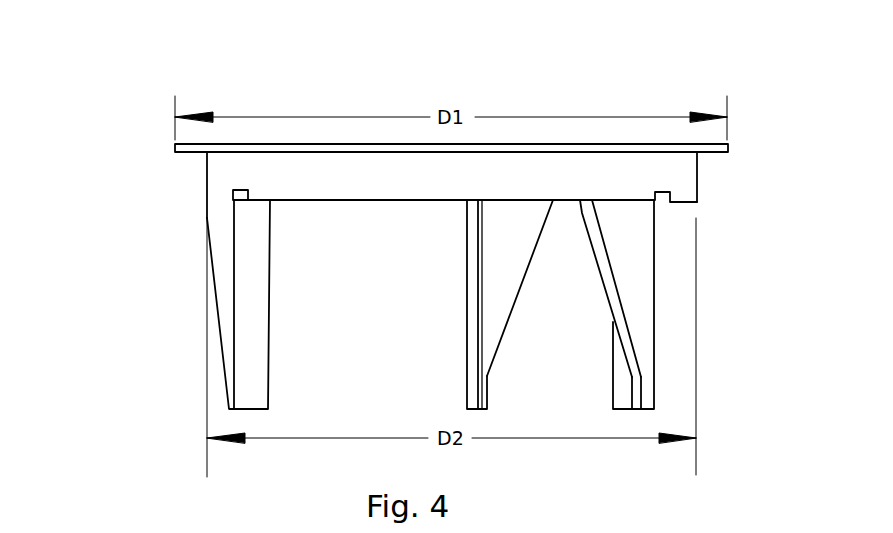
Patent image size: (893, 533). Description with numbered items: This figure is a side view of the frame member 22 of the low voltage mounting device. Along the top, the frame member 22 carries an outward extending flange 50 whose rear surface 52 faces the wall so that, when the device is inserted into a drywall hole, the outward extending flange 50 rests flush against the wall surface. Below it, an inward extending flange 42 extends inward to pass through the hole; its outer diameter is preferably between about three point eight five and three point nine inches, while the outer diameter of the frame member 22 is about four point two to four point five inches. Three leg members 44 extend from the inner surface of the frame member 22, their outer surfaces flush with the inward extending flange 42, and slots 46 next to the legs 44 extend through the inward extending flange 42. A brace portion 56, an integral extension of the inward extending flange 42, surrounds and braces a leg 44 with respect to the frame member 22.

The frame member 22 is at (125, 132).
The inward extending flange 42 is at (454, 186).
The leg members 44 is at (247, 280).
The slots 46 is at (242, 198).
The outward extending flange 50 is at (712, 153).
The rear surface 52 is at (190, 152).
The brace portion 56 is at (525, 249).